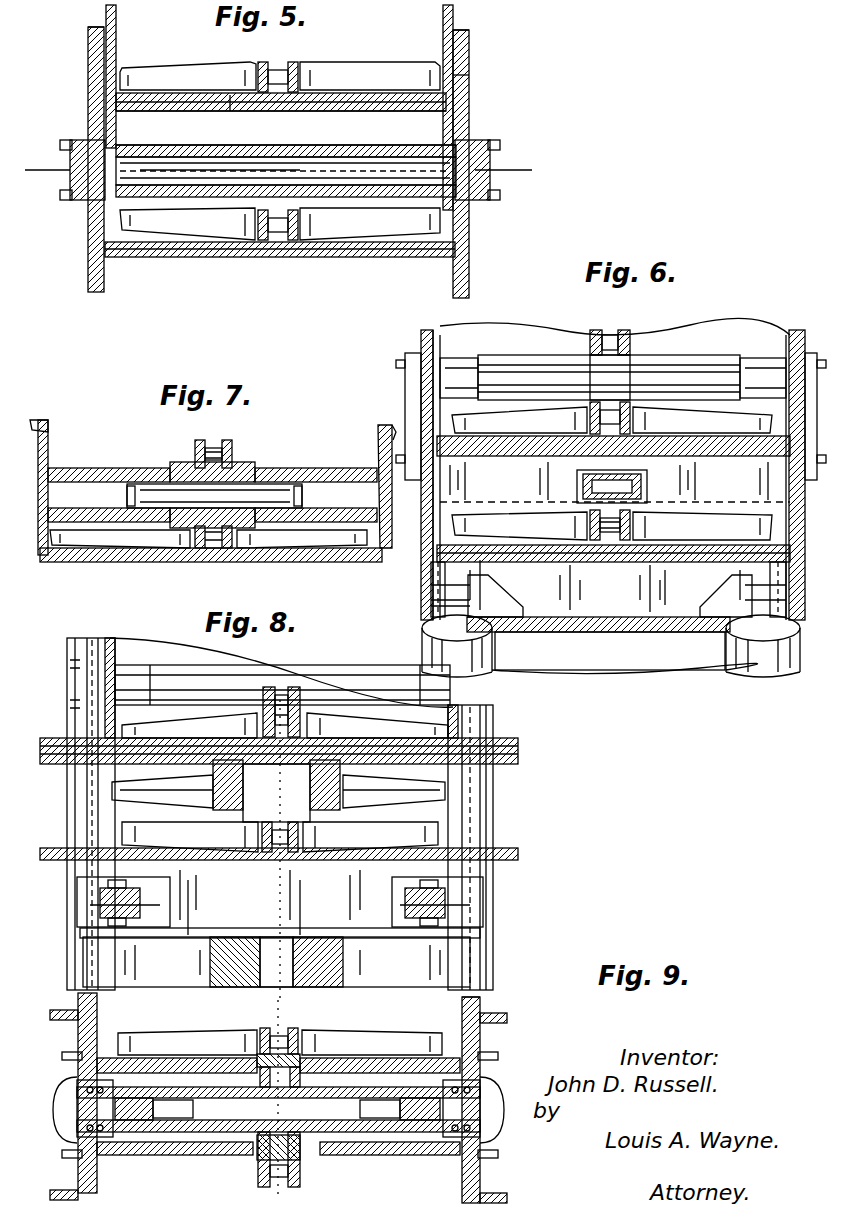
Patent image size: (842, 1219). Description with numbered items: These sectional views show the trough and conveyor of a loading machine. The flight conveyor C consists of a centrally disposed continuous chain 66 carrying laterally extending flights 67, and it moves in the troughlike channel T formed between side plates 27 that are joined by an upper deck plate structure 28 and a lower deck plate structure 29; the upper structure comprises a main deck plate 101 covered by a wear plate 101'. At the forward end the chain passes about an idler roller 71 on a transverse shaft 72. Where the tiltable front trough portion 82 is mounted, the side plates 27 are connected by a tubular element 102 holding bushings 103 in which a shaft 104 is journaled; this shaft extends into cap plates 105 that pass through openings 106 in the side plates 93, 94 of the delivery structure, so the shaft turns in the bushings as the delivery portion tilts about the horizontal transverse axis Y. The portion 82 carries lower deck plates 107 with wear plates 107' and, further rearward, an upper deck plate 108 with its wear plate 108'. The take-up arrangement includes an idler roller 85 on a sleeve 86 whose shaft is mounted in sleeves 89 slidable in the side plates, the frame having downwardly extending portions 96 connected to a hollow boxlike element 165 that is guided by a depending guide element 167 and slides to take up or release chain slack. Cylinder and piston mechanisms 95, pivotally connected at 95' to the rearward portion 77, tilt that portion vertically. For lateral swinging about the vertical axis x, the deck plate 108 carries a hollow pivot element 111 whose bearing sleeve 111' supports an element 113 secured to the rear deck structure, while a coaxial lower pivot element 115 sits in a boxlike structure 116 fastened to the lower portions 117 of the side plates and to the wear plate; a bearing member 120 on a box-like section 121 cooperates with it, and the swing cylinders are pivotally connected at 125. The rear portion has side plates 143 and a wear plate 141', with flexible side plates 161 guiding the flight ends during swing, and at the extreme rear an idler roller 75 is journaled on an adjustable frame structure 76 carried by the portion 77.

In FIG. 5, the side plates 27 is at (118, 36).
In FIG. 7, the side plates 27 is at (52, 468).
In FIG. 5, the upper deck plate structure 28 is at (389, 86).
In FIG. 7, the lower deck plate structure 29 is at (215, 550).
In FIG. 5, the chain 66 is at (292, 64).
In FIG. 7, the chain 66 is at (232, 460).
In FIG. 6, the chain 66 is at (625, 542).
In FIG. 8, the chain 66 is at (268, 688).
In FIG. 9, the chain 66 is at (300, 1033).
In FIG. 5, the flights 67 is at (210, 70).
In FIG. 7, the flights 67 is at (335, 548).
In FIG. 6, the flights 67 is at (520, 415).
In FIG. 8, the flights 67 is at (375, 727).
In FIG. 7, the idler roller 71 is at (185, 468).
In FIG. 7, the transverse shaft 72 is at (290, 490).
In FIG. 9, the idler roller 75 is at (298, 1156).
In FIG. 9, the adjustable frame structure 76 is at (494, 1136).
In FIG. 9, the rearward portion of the delivery conveyor trough 77 is at (478, 1002).
In FIG. 5, the front trough portion 82 is at (462, 92).
In FIG. 6, the idler roller 85 is at (626, 352).
In FIG. 8, the idler roller 85 is at (285, 690).
In FIG. 6, the sleeve 86 is at (695, 376).
In FIG. 6, the sleeves 89 is at (462, 368).
In FIG. 5, the side plate 93 is at (88, 58).
In FIG. 6, the side plate 93 is at (422, 342).
In FIG. 5, the side plate 94 is at (95, 36).
In FIG. 6, the side plate 94 is at (445, 336).
In FIG. 8, the side plate 94 is at (100, 640).
In FIG. 6, the extensible cylinder and piston mechanisms 95 is at (595, 663).
In FIG. 6, the pivotal connection 95' is at (588, 613).
In FIG. 6, the downwardly extending portions 96 is at (412, 386).
In FIG. 5, the main deck plate 101 is at (286, 128).
In FIG. 5, the wear plate 101' is at (240, 115).
In FIG. 5, the tubular element 102 is at (300, 160).
In FIG. 5, the bushings 103 is at (150, 150).
In FIG. 5, the shaft 104 is at (300, 176).
In FIG. 5, the cap plates 105 is at (84, 152).
In FIG. 5, the openings 106 is at (492, 165).
In FIG. 5, the lower deck plates 107 is at (280, 264).
In FIG. 6, the lower deck plates 107 is at (613, 583).
In FIG. 5, the wear plates 107' is at (280, 268).
In FIG. 6, the wear plates 107' is at (613, 607).
In FIG. 8, the wear plates 107' is at (299, 872).
In FIG. 6, the upper deck plate 108 is at (613, 468).
In FIG. 8, the upper deck plate 108 is at (307, 746).
In FIG. 6, the wear plate 108' is at (615, 482).
In FIG. 8, the wear plate 108' is at (304, 730).
In FIG. 8, the hollow pivot element 111 is at (377, 795).
In FIG. 8, the bearing sleeve 111' is at (177, 795).
In FIG. 8, the element 113 is at (338, 722).
In FIG. 8, the pivot element 115 is at (238, 988).
In FIG. 6, the boxlike structure 116 is at (565, 633).
In FIG. 8, the boxlike structure 116 is at (392, 975).
In FIG. 8, the lower portions of the side plates 117 is at (470, 962).
In FIG. 8, the bearing member 120 is at (332, 960).
In FIG. 8, the box-like section 121 is at (80, 915).
In FIG. 8, the pivotal connection 125 is at (77, 887).
In FIG. 9, the wear plate 141' is at (278, 1084).
In FIG. 9, the side plates 143 is at (97, 1175).
In FIG. 8, the flexible side plates 161 is at (112, 640).
In FIG. 6, the hollow boxlike element 165 is at (590, 505).
In FIG. 6, the depending guide element 167 is at (695, 508).
In FIG. 5, the flight conveyor C is at (265, 63).
In FIG. 7, the flight conveyor C is at (230, 442).
In FIG. 6, the flight conveyor C is at (630, 418).
In FIG. 8, the flight conveyor C is at (305, 702).
In FIG. 9, the flight conveyor C is at (265, 1030).
In FIG. 7, the troughlike channel T is at (112, 440).
In FIG. 5, the horizontal transverse axis Y is at (278, 171).
In FIG. 8, the vertical axis x is at (285, 826).
In FIG. 9, the vertical axis x is at (283, 1097).